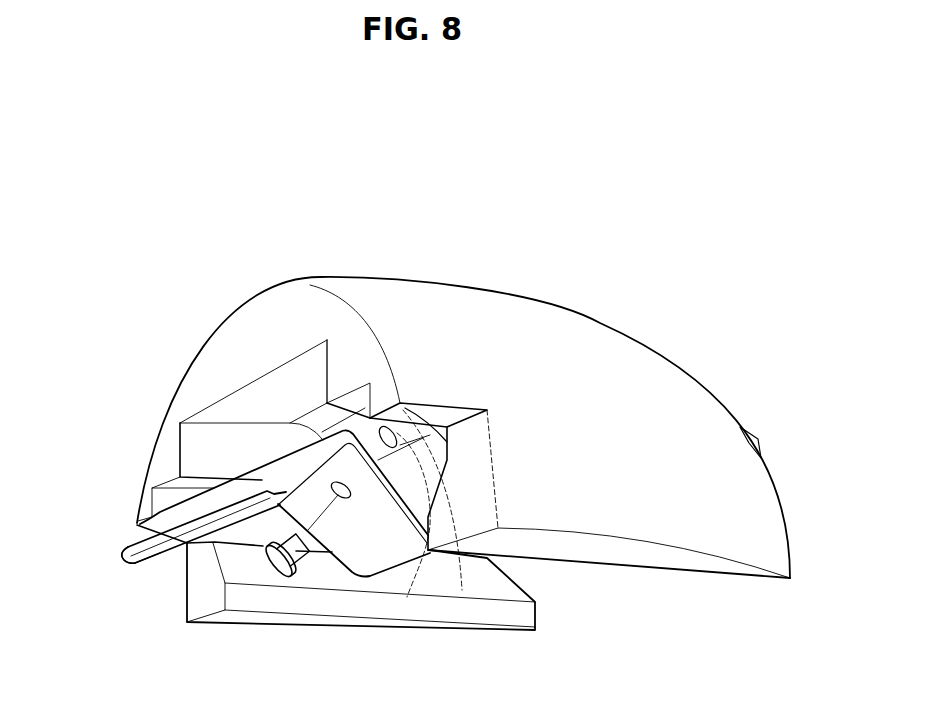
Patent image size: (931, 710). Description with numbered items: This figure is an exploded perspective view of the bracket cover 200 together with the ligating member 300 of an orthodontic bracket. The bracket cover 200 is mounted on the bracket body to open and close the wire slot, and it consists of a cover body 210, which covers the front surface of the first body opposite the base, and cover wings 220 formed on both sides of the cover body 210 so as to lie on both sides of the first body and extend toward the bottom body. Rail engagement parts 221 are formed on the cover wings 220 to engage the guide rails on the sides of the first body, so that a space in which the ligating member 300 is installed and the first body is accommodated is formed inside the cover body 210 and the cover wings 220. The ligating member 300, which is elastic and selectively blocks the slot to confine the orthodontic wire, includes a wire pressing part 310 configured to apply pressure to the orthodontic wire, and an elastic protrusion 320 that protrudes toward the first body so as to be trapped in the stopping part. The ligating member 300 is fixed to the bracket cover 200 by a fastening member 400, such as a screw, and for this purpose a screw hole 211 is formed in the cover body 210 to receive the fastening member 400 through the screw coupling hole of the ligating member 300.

The bracket cover 200 is at (186, 340).
The cover body 210 is at (540, 316).
The screw hole 211 is at (455, 532).
The cover wings 220 is at (162, 463).
The rail engagement parts 221 is at (254, 604).
The ligating member 300 is at (110, 550).
The wire pressing part 310 is at (155, 543).
The elastic protrusion 320 is at (379, 565).
The fastening member 400 is at (281, 580).